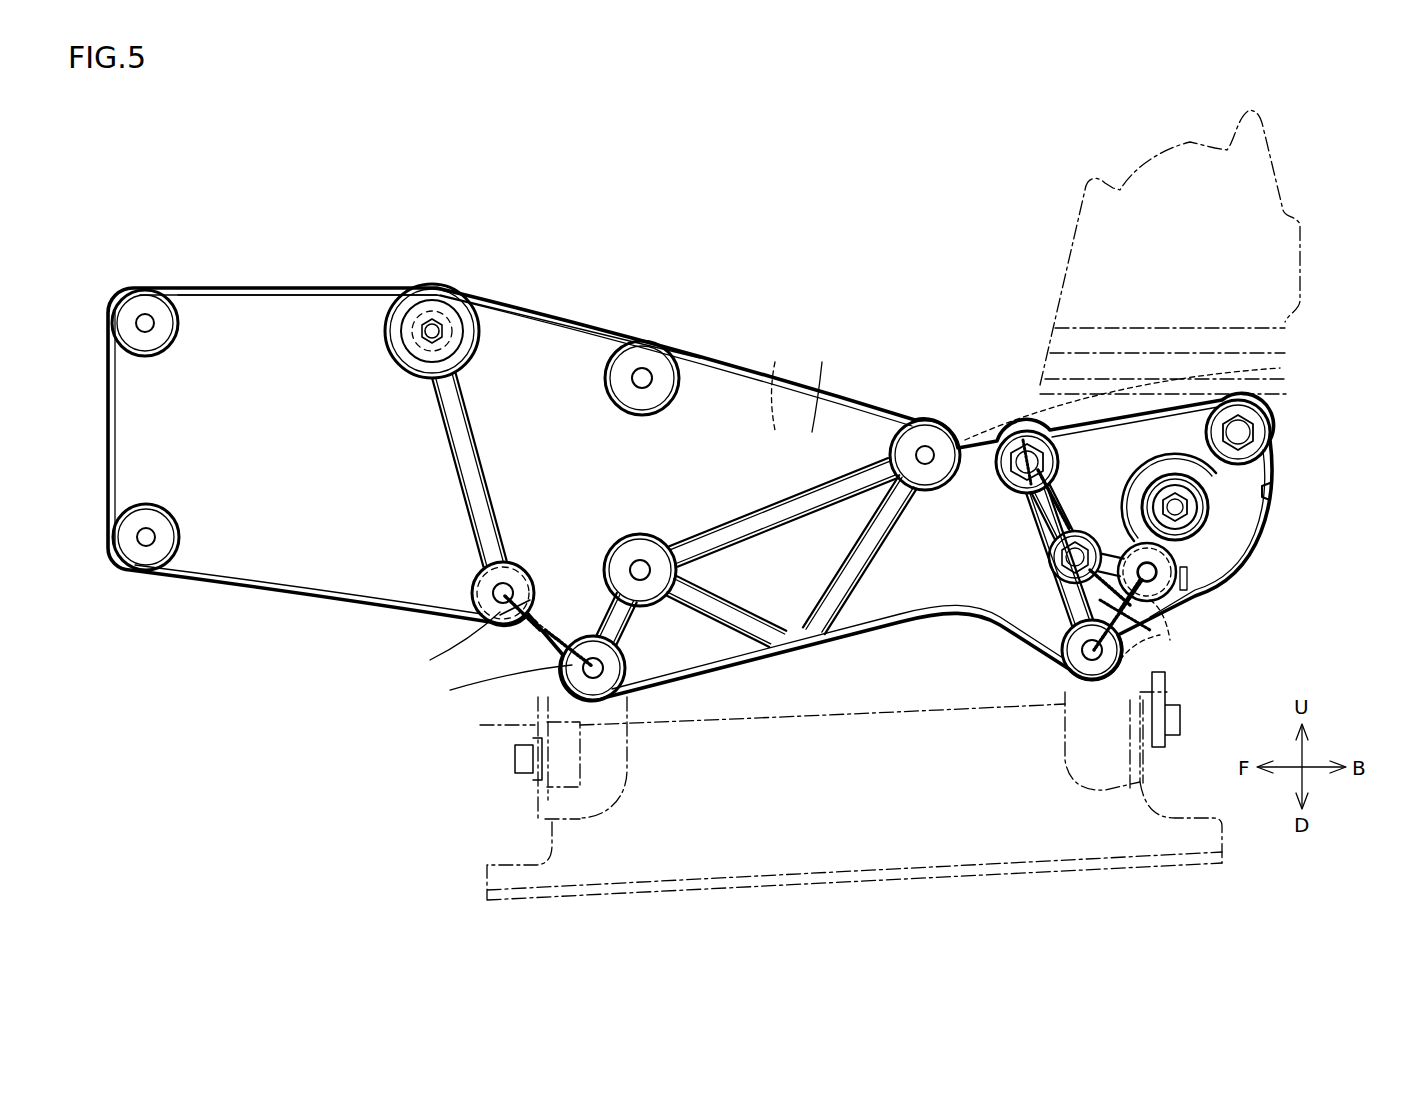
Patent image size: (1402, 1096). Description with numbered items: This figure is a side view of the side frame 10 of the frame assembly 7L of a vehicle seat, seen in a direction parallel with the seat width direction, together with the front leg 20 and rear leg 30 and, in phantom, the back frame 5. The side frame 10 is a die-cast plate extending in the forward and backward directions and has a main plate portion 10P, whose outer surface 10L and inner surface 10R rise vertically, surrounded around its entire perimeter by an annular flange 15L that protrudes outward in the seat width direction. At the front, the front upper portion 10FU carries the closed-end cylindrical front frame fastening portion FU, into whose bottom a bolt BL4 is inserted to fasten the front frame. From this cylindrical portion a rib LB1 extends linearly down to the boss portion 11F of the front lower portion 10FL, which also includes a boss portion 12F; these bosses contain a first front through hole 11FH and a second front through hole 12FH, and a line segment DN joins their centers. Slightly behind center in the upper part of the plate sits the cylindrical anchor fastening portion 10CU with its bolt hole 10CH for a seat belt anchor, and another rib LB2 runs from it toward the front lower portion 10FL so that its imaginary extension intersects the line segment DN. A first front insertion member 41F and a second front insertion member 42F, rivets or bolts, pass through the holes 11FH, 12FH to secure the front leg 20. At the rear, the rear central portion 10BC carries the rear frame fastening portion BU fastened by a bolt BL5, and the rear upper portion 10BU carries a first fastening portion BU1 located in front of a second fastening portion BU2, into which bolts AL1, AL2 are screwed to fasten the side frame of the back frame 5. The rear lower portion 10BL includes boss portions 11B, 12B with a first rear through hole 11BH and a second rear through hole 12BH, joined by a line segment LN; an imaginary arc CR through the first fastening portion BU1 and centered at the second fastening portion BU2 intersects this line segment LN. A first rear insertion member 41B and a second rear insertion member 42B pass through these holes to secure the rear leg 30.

The back frame 5 is at (1125, 188).
The frame assembly 7L is at (156, 196).
The side frame 10 is at (552, 305).
The front upper portion 10FU is at (380, 348).
The front frame fastening portion FU is at (426, 310).
The bolt BL4 is at (434, 331).
The annular flange 15L is at (726, 365).
The main plate portion 10P is at (842, 328).
The inner surface 10R is at (775, 378).
The outer surface 10L is at (820, 379).
The anchor fastening portion 10CU is at (925, 438).
The bolt hole 10CH is at (930, 455).
The rib LB1 is at (468, 462).
The rib LB2 is at (746, 526).
The first front insertion member 41F is at (518, 580).
The second front insertion member 42F is at (570, 630).
The first front through hole 11FH is at (500, 592).
The boss portion 11F is at (440, 644).
The line segment DN is at (545, 636).
The front lower portion 10FL is at (410, 710).
The boss portion 12F is at (490, 684).
The second front through hole 12FH is at (600, 668).
The front leg 20 is at (530, 724).
The rear leg 30 is at (1160, 690).
The bolt AL1 is at (1012, 470).
The imaginary arc CR is at (1062, 536).
The line segment LN is at (1070, 612).
The second rear through hole 12BH is at (1090, 650).
The second rear insertion member 42B is at (1055, 670).
The first fastening portion BU1 is at (1151, 396).
The second fastening portion BU2 is at (1258, 422).
The rear upper portion 10BU is at (1340, 356).
The bolt AL2 is at (1253, 436).
The rear central portion 10BC is at (1255, 490).
The bolt BL5 is at (1178, 507).
The rear frame fastening portion BU is at (1218, 528).
The first rear insertion member 41B is at (1165, 565).
The first rear through hole 11BH is at (1152, 576).
The boss portion 11B is at (1150, 592).
The rear lower portion 10BL is at (1282, 600).
The boss portion 12B is at (1105, 652).